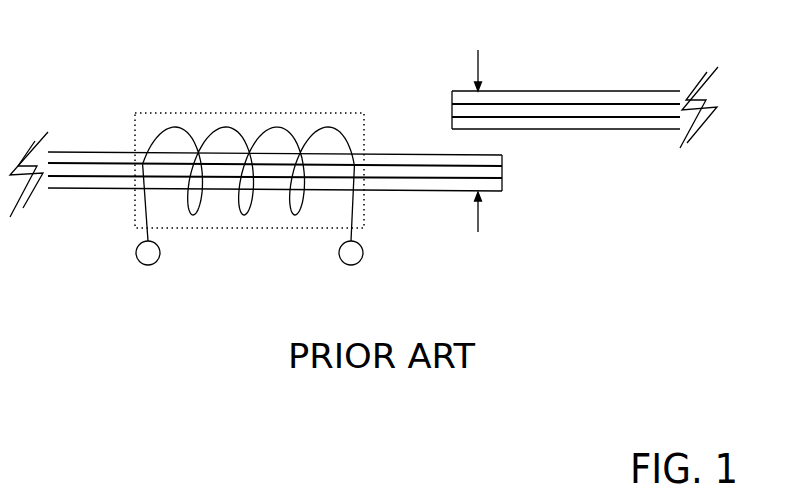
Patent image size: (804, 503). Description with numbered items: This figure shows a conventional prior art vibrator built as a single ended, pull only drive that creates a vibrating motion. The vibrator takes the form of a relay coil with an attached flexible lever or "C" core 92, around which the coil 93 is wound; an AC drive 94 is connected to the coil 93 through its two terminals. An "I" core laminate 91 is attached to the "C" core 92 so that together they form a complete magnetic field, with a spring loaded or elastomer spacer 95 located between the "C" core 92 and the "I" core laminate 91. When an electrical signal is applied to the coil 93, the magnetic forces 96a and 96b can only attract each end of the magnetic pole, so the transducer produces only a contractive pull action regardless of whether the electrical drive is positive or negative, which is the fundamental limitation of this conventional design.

The "I" core laminate 91 is at (542, 91).
The "C" core 92 is at (452, 193).
The coil 93 is at (328, 125).
The AC power source 94 is at (178, 113).
The spring loaded or elastomer spacer 95 is at (477, 142).
The magnetic force 96a is at (495, 68).
The magnetic force 96b is at (496, 212).